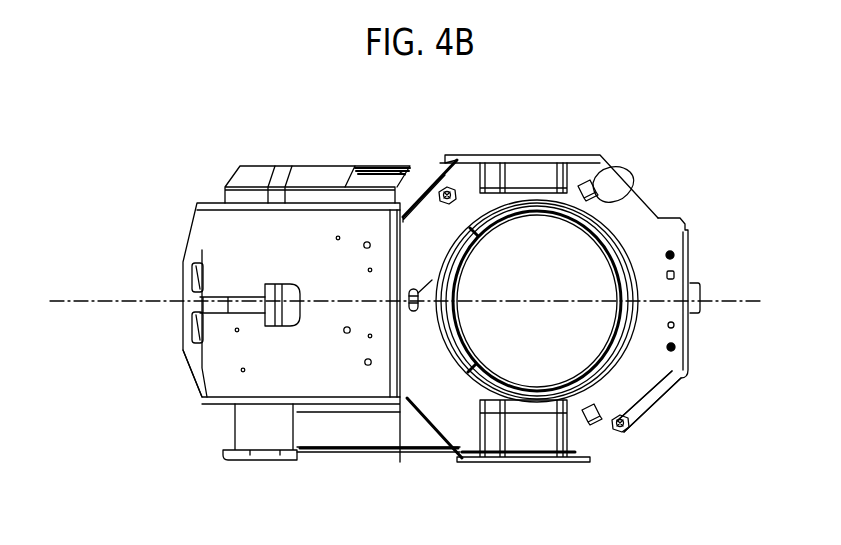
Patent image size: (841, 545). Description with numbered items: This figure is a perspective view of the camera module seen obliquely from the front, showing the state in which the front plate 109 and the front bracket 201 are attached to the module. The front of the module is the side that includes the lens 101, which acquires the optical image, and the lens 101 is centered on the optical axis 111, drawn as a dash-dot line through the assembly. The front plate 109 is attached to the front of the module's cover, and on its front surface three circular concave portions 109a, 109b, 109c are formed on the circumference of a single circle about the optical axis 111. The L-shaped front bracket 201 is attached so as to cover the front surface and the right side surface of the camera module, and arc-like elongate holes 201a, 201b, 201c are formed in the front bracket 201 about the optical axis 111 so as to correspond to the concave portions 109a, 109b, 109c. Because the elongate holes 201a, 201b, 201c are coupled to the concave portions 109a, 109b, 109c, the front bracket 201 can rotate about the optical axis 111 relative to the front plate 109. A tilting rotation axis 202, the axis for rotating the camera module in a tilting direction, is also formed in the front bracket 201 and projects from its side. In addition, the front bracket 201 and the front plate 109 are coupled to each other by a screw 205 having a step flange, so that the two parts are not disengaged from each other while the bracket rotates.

The lens 101 is at (563, 157).
The front plate 109 is at (452, 157).
The concave portion 109a is at (593, 184).
The concave portion 109b is at (590, 428).
The concave portion 109c is at (422, 297).
The optical axis 111 is at (150, 301).
The front bracket 201 is at (210, 203).
The elongate hole 201a is at (624, 175).
The elongate hole 201b is at (675, 378).
The elongate hole 201c is at (413, 283).
The tilting rotation axis 202 is at (205, 398).
The screw 205 is at (460, 187).